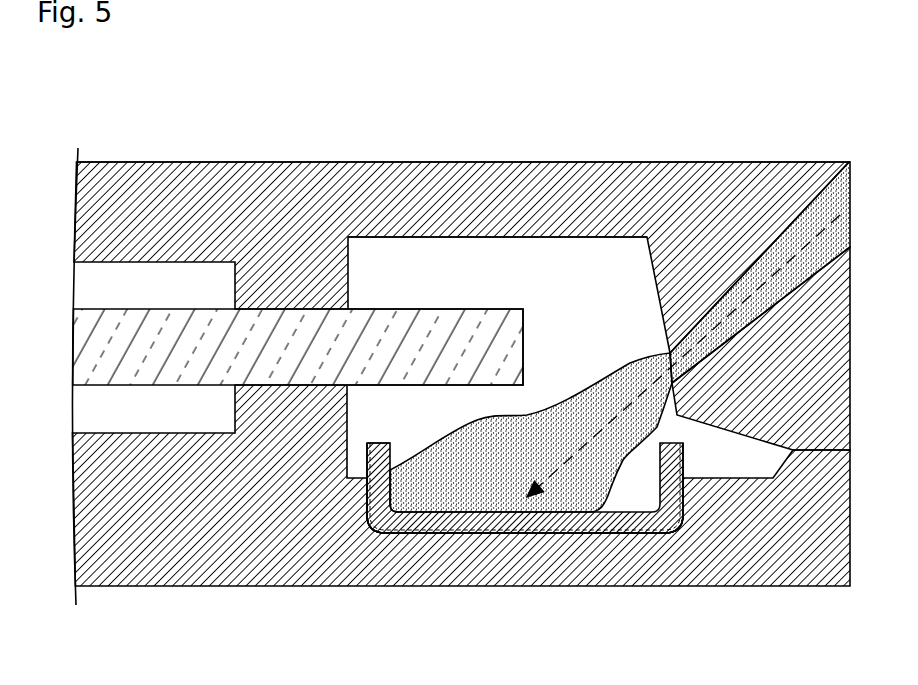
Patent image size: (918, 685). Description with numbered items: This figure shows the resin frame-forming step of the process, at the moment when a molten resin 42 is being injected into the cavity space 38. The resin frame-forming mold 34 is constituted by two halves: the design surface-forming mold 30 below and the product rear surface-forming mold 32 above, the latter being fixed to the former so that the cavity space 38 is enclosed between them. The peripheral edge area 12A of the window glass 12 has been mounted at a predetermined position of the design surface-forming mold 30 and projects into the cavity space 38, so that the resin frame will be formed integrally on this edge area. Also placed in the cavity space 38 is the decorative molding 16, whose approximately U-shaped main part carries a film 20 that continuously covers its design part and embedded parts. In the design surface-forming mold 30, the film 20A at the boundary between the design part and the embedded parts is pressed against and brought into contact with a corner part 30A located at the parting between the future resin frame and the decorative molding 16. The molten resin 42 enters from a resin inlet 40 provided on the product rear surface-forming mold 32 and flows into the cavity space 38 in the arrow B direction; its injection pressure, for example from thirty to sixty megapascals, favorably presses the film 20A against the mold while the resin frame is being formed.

The window glass 12 is at (204, 309).
The peripheral edge area 12A is at (453, 311).
The decorative molding 16 is at (407, 446).
The film 20 is at (525, 528).
The film 20A is at (367, 483).
The design surface-forming mold 30 is at (251, 592).
The corner part 30A is at (369, 481).
The product rear surface-forming mold 32 is at (576, 157).
The resin frame-forming mold 34 is at (714, 118).
The cavity space 38 is at (561, 292).
The resin inlet 40 is at (773, 258).
The molten resin 42 is at (586, 404).